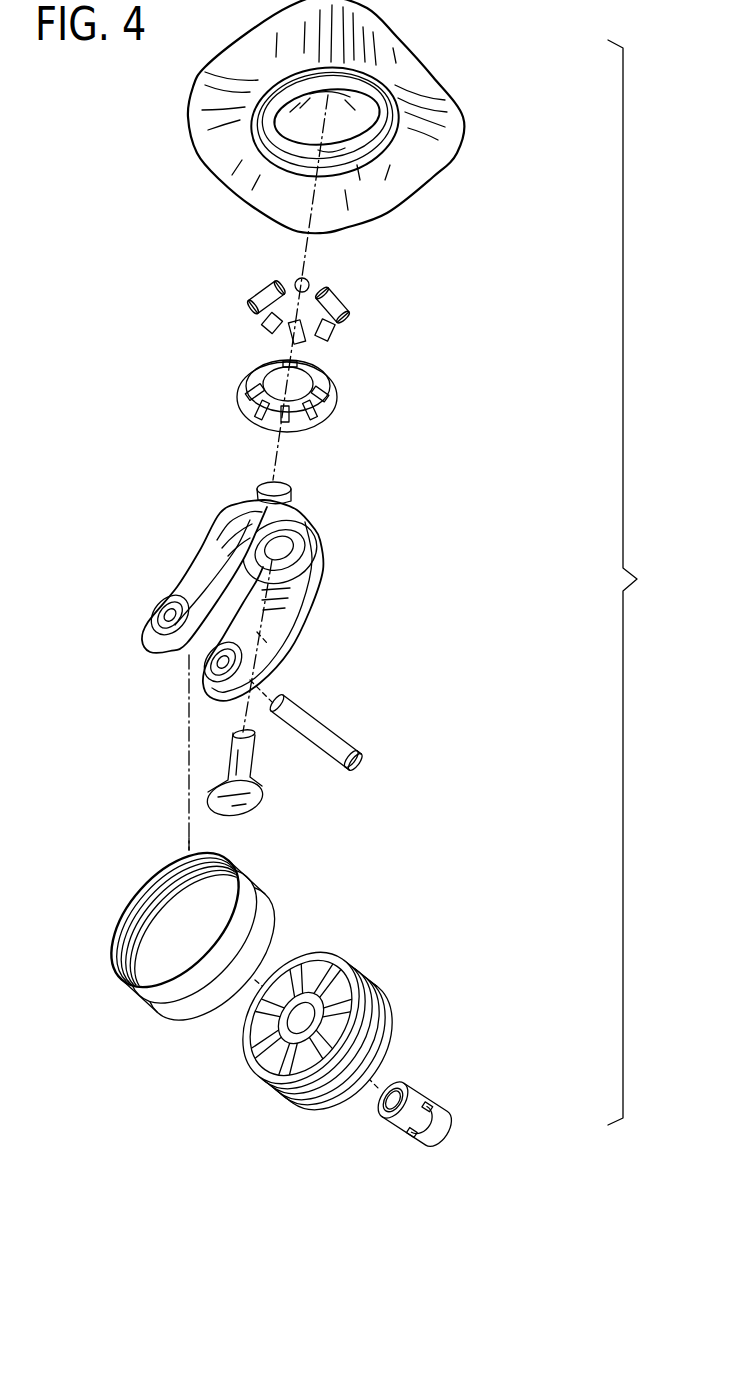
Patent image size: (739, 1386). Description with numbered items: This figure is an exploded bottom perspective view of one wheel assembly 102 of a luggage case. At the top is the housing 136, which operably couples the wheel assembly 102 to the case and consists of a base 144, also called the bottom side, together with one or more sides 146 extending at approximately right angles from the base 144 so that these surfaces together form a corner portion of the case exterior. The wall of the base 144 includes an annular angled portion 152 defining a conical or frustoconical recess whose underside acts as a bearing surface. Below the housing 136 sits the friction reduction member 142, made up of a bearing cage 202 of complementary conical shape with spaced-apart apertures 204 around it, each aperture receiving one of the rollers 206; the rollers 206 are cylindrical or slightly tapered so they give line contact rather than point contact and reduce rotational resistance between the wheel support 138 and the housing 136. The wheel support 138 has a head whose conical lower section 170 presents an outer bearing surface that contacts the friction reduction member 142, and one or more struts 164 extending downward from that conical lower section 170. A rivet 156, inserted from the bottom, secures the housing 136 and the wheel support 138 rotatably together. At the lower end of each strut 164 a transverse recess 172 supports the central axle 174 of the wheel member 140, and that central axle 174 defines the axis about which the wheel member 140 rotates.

The wheel assembly 102 is at (645, 582).
The housing 136 is at (344, 130).
The wheel support 138 is at (241, 591).
The wheel member 140 is at (365, 1202).
The friction reduction member 142 is at (283, 375).
The base 144 is at (372, 208).
The sides 146 is at (400, 62).
The annular angled portion 152 is at (305, 125).
The rivet 156 is at (250, 765).
The struts 164 is at (207, 570).
The conical lower section 170 is at (297, 560).
The recess 172 is at (163, 612).
The central axle 174 is at (323, 717).
The bearing cage 202 is at (311, 416).
The apertures 204 is at (264, 416).
The rollers 206 is at (343, 305).